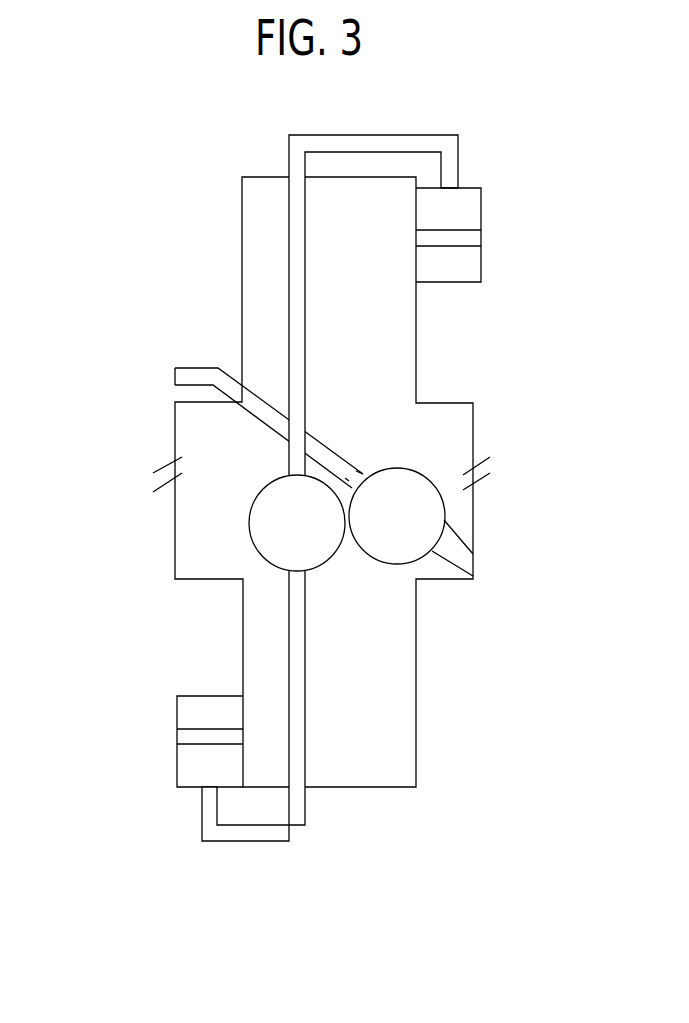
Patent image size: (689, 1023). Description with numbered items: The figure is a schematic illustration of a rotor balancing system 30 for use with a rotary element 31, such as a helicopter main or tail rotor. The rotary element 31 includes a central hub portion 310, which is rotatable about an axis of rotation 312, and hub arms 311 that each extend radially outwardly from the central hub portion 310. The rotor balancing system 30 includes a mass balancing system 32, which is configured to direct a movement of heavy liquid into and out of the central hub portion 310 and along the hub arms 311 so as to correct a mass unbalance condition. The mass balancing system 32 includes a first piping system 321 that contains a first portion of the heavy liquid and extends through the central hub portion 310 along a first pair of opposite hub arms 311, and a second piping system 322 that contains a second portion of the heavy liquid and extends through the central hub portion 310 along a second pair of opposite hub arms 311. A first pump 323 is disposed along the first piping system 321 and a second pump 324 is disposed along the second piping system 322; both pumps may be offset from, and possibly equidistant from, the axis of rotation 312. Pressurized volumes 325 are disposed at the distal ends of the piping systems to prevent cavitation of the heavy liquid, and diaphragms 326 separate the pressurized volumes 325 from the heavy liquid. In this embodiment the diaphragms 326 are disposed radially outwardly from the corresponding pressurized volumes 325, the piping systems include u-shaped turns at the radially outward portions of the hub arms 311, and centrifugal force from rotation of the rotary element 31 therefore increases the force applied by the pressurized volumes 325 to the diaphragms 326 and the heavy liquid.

The rotor balancing system 30 is at (303, 488).
The rotary element 31 is at (300, 476).
The hub arms 311 is at (250, 198).
The central hub portion 310 is at (345, 427).
The axis of rotation 312 is at (355, 478).
The mass balancing system 32 is at (320, 512).
The first piping system 321 is at (293, 218).
The second piping system 322 is at (182, 375).
The first pump 323 is at (258, 540).
The second pump 324 is at (442, 516).
The pressurized volumes 325 is at (475, 262).
The diaphragms 326 is at (475, 238).